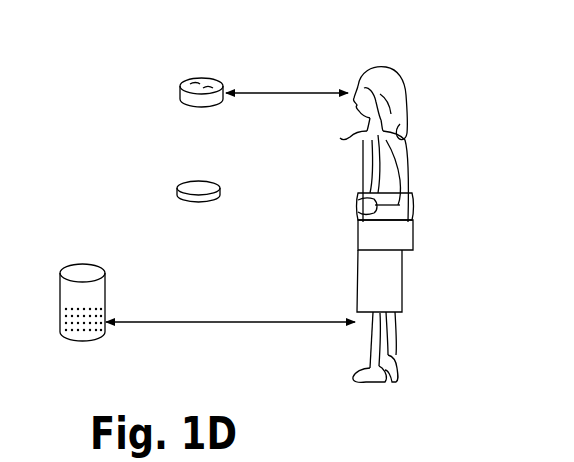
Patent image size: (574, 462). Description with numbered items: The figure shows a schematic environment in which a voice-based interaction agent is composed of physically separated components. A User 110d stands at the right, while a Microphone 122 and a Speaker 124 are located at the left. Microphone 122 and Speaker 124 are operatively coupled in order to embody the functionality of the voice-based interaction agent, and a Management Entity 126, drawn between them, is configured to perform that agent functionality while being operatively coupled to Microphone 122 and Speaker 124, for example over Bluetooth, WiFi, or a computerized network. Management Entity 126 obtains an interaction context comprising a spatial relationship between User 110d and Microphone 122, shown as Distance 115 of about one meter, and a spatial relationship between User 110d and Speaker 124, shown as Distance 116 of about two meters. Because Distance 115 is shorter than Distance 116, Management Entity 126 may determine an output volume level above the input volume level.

The user 110d is at (352, 132).
The distance 115 is at (307, 93).
The distance 116 is at (267, 322).
The microphone 122 is at (185, 82).
The speaker 124 is at (105, 287).
The management entity 126 is at (220, 188).